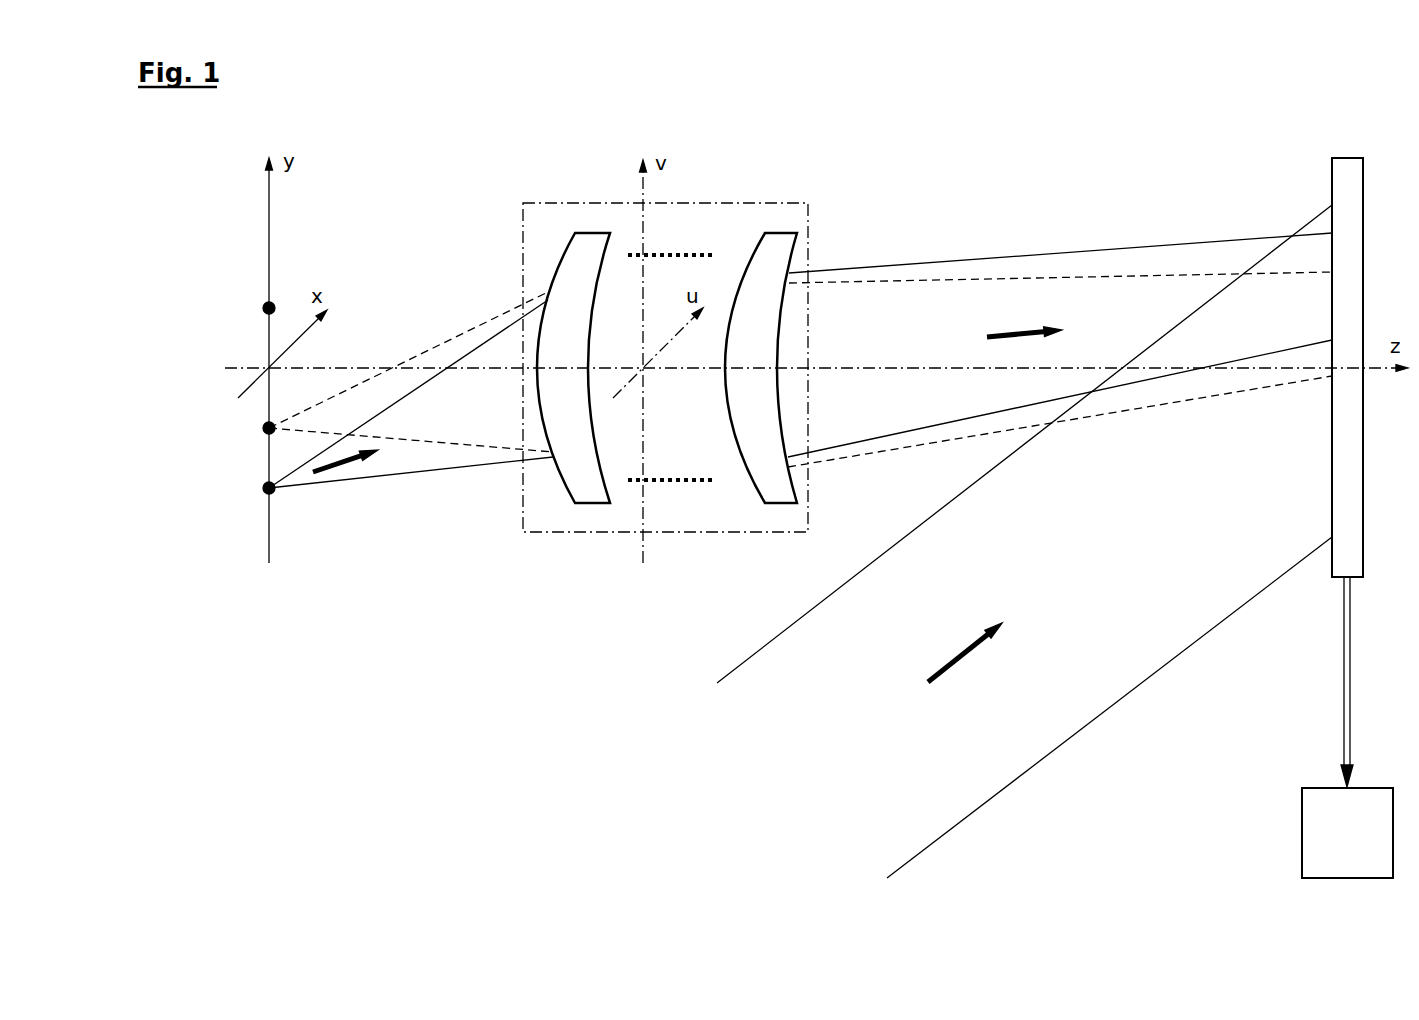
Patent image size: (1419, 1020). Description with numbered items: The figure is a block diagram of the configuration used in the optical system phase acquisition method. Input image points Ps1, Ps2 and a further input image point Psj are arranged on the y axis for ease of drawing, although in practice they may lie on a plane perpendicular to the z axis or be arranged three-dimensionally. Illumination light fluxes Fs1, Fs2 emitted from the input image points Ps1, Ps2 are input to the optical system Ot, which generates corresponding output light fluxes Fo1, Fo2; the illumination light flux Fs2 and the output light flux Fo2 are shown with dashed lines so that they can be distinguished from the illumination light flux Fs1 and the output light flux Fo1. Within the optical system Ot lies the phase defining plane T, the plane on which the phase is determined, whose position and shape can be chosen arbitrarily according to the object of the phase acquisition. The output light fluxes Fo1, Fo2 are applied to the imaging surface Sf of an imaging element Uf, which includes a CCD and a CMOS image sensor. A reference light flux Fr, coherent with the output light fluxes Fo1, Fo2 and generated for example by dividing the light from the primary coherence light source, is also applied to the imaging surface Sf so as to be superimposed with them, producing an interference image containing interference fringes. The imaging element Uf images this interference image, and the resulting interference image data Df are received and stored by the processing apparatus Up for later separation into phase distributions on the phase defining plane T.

The input image point Psj is at (263, 310).
The input image point Ps2 is at (263, 430).
The input image point Ps1 is at (263, 490).
The illumination light flux Fs1 is at (396, 476).
The illumination light flux Fs2 is at (466, 448).
The optical system Ot is at (541, 203).
The phase defining plane T is at (645, 512).
The output light flux Fo1 is at (920, 265).
The output light flux Fo2 is at (1012, 280).
The reference light flux Fr is at (1037, 736).
The imaging element Uf is at (1345, 175).
The imaging surface Sf is at (1332, 558).
The interference image data Df is at (1345, 722).
The processing apparatus Up is at (1347, 833).